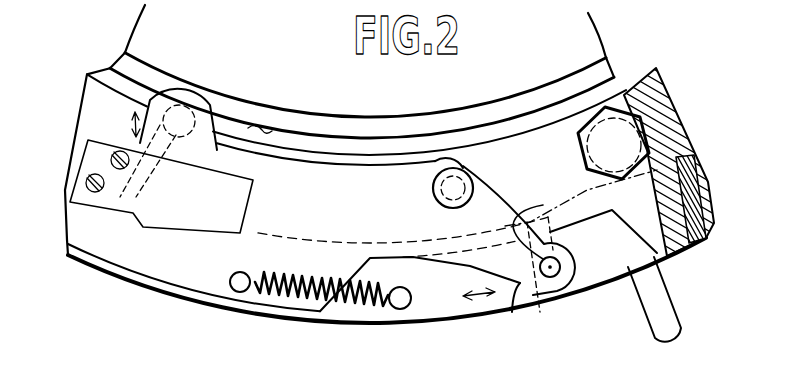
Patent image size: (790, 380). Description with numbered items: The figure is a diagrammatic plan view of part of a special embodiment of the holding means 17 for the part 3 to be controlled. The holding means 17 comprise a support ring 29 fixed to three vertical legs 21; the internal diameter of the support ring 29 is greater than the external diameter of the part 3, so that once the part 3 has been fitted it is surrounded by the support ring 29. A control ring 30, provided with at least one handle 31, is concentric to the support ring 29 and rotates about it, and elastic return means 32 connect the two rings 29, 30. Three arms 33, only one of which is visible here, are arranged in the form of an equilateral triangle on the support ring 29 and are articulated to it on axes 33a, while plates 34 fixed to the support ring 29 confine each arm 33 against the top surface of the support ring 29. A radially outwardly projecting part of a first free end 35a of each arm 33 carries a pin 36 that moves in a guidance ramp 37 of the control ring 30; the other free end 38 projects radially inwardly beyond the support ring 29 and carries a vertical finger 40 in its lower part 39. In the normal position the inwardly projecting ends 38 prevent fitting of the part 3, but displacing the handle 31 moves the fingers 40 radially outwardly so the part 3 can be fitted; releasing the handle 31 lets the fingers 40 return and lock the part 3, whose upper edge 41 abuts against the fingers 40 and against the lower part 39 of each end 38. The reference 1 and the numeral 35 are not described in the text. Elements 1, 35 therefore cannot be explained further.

The outer ring 1 is at (436, 126).
The part 3 is at (319, 88).
The holding means 17 is at (122, 294).
The vertical legs 21 is at (606, 153).
The support ring 29 is at (503, 170).
The control ring 30 is at (630, 233).
The handle 31 is at (690, 286).
The elastic return means 32 is at (318, 278).
The arms 33 is at (369, 196).
The axes 33a is at (433, 181).
The plates 34 is at (234, 200).
The actuating lever 35 is at (534, 304).
The first free end 35a is at (489, 316).
The pin 36 is at (518, 213).
The guidance ramp 37 is at (566, 290).
The other free end 38 is at (110, 70).
The lower part 39 is at (238, 122).
The vertical finger 40 is at (171, 110).
The upper edge 41 is at (275, 130).